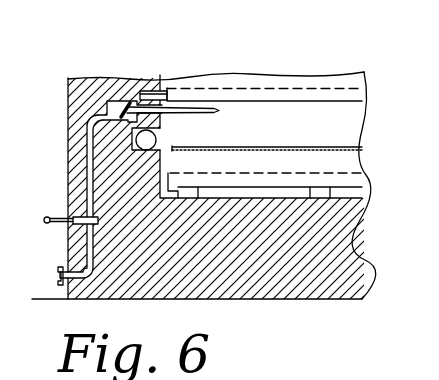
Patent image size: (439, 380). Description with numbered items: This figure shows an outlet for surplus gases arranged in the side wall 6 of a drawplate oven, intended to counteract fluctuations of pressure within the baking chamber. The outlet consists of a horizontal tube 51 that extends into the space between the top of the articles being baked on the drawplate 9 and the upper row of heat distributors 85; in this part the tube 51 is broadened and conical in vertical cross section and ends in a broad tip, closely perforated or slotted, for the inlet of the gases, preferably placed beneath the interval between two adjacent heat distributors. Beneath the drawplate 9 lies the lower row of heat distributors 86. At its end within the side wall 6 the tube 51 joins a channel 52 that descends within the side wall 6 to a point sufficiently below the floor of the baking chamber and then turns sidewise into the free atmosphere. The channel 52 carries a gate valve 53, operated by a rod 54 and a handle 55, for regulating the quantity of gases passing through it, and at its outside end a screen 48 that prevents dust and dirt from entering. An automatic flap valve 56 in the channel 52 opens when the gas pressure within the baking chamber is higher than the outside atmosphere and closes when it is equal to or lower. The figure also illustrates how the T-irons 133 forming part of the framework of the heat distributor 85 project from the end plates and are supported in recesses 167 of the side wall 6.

The side wall 6 is at (68, 104).
The channel 52 is at (89, 142).
The automatic flap valve 56 is at (115, 100).
The T-irons 133 is at (163, 91).
The recesses 167 is at (147, 91).
The horizontal tube 51 is at (194, 113).
The upper row of heat distributors 85 is at (339, 100).
The drawplate 9 is at (287, 140).
The lower row of heat distributors 86 is at (305, 160).
The gate valve 53 is at (83, 217).
The rod 54 is at (62, 225).
The handle 55 is at (44, 220).
The screen 48 is at (57, 276).